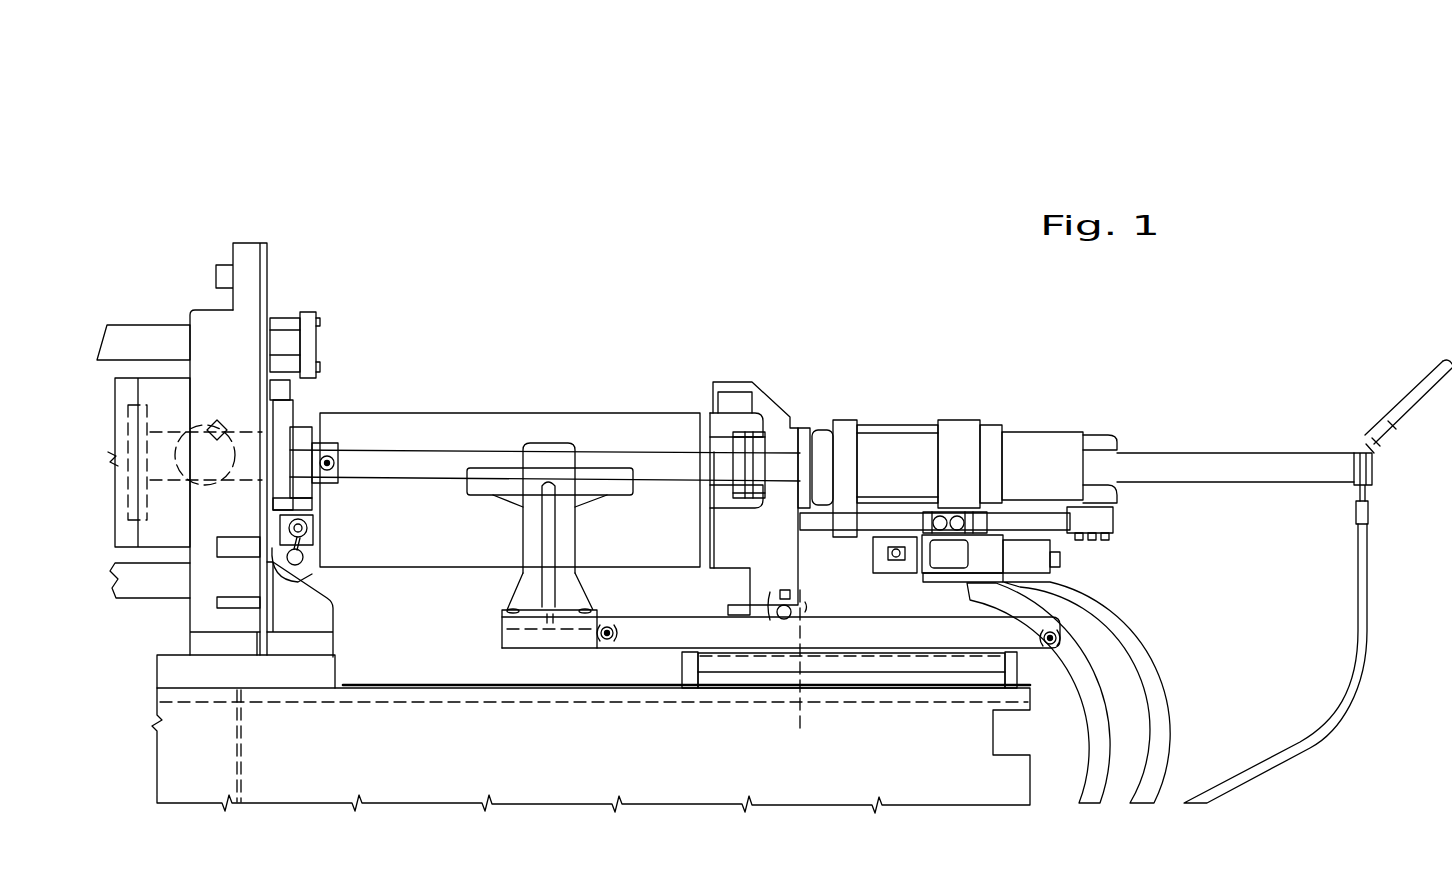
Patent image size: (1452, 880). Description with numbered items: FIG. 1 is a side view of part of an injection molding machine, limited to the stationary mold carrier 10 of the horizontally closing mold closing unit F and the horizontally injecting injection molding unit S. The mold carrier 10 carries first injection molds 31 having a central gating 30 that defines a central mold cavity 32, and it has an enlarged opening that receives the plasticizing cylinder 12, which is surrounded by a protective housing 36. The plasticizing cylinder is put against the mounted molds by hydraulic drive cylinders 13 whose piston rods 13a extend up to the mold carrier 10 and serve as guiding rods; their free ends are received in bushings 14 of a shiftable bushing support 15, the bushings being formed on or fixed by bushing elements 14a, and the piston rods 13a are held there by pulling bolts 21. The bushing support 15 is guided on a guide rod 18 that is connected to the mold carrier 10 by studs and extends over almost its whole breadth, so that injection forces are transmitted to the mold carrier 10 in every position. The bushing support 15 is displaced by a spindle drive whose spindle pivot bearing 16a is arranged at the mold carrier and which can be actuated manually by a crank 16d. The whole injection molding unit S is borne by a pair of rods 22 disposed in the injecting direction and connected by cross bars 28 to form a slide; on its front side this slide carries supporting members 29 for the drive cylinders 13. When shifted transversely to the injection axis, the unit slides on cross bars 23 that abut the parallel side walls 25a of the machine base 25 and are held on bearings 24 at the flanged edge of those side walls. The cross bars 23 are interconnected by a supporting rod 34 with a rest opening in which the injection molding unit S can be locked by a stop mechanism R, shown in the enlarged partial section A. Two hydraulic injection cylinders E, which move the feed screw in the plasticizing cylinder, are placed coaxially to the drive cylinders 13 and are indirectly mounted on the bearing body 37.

The stationary mold carrier 10 is at (240, 332).
The plasticizing cylinder 12 is at (172, 430).
The drive cylinders 13 is at (802, 428).
The piston rods 13a is at (455, 455).
The bushings 14 is at (305, 462).
The bushing elements 14a is at (322, 450).
The bushing support 15 is at (282, 501).
The spindle pivot bearing 16a is at (308, 526).
The crank 16d is at (315, 563).
The guide rod 18 is at (285, 392).
The pulling bolts 21 is at (338, 464).
The pair of rods 22 is at (838, 637).
The cross bars 23 is at (694, 683).
The bearing 24 is at (690, 689).
The machine base 25 is at (458, 688).
The side walls 25a is at (591, 750).
The cross bars 28 is at (612, 628).
The supporting members 29 is at (545, 443).
The central gating 30 is at (160, 463).
The first injection molds 31 is at (160, 542).
The central mold cavity 32 is at (106, 405).
The supporting rod 34 is at (857, 667).
The protective housing 36 is at (606, 425).
The bearing body 37 is at (776, 563).
The injection cylinders E is at (880, 448).
The stop mechanism R is at (790, 597).
The enlarged partial section A is at (799, 680).
The mold closing unit F is at (248, 190).
The injection molding unit S is at (782, 302).